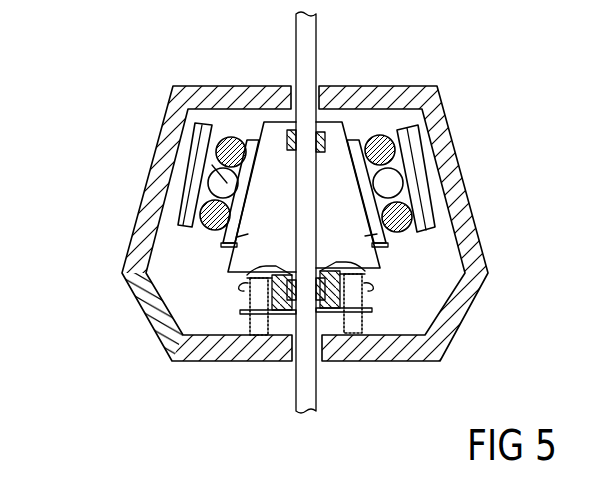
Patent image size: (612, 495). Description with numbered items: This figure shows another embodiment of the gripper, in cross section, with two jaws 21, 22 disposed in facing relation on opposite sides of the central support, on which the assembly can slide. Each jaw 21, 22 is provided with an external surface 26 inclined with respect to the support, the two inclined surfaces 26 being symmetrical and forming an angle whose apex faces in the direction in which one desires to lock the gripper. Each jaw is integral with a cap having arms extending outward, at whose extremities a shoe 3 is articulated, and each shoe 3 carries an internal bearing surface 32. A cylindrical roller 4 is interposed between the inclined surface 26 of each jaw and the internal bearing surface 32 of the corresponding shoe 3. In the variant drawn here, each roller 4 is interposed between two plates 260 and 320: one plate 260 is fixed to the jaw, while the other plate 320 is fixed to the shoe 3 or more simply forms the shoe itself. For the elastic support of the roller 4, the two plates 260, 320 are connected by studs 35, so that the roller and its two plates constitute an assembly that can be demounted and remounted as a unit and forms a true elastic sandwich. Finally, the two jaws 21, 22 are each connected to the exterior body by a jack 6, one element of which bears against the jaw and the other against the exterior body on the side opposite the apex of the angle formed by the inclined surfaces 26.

The jaw 21 is at (380, 268).
The jaw 22 is at (222, 272).
The inclined external surface 26 is at (277, 178).
The plate 260 is at (230, 246).
The shoe 3 is at (197, 148).
The plate 320 is at (198, 124).
The internal bearing surface 32 is at (228, 241).
The studs 35 is at (398, 148).
The cylindrical roller 4 is at (205, 222).
The jack 6 is at (245, 316).